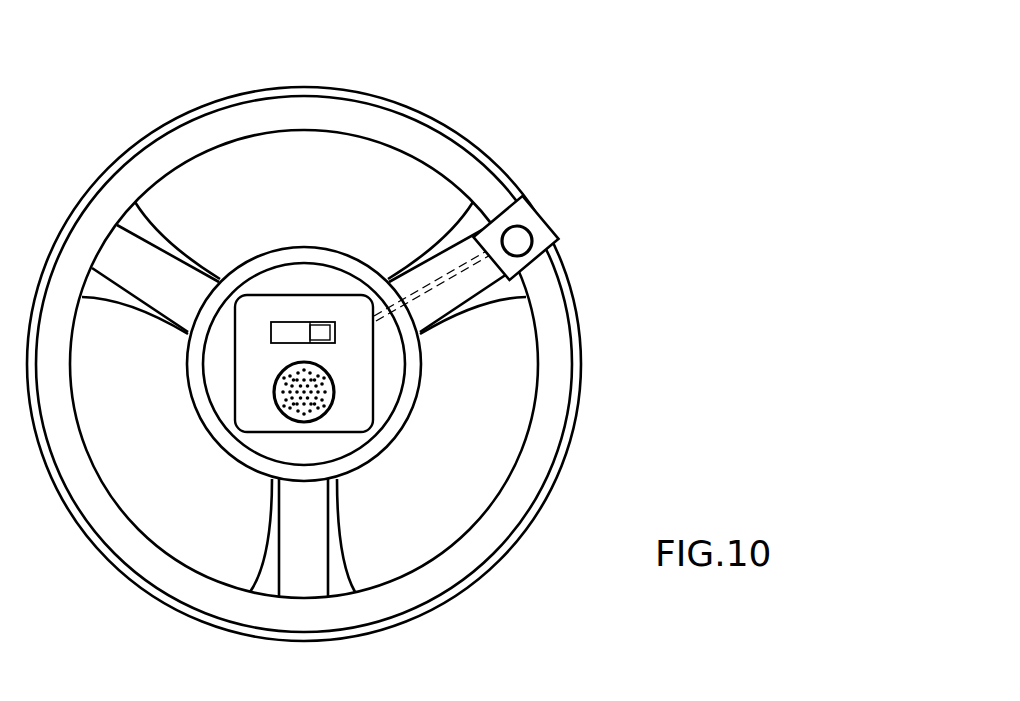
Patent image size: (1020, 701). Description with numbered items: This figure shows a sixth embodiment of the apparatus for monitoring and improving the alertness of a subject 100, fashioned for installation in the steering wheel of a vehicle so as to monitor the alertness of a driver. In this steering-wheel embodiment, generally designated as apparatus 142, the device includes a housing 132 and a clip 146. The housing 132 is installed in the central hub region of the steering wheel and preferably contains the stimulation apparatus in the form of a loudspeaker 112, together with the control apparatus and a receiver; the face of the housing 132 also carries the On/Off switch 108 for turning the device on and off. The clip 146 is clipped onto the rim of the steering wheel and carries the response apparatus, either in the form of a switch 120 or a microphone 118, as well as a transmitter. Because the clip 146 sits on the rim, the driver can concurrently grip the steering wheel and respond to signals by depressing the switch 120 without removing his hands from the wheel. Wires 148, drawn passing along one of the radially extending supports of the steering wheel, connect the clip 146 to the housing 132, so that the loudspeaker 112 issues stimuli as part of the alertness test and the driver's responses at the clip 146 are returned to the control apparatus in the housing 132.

The apparatus for monitoring and improving the alertness of a subject 100 is at (409, 336).
The apparatus 142 is at (562, 117).
The clip 146 is at (570, 228).
The switch 120 is at (584, 216).
The microphone 118 is at (517, 236).
The wires 148 is at (447, 277).
The housing 132 is at (372, 370).
The On/Off switch 108 is at (297, 332).
The loudspeaker 112 is at (327, 415).